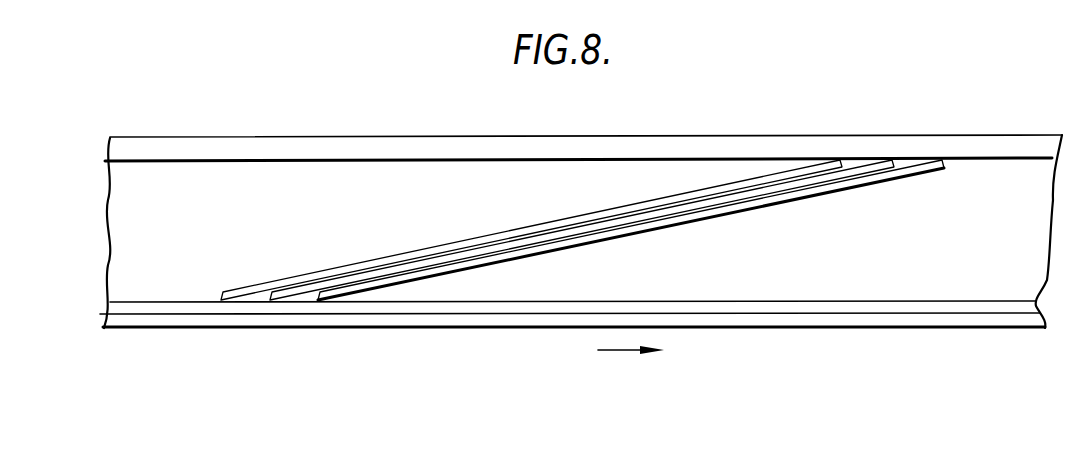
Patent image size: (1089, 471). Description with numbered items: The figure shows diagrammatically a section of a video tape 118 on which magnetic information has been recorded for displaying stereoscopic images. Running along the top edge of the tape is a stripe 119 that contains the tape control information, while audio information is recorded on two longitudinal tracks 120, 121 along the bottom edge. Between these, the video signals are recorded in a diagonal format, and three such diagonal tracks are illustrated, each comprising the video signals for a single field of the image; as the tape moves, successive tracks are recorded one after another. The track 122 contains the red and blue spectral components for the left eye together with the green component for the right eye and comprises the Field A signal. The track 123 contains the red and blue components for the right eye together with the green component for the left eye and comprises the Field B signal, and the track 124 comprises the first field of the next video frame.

The video tape 118 is at (130, 224).
The stripe 119 is at (485, 147).
The audio track 120 is at (450, 318).
The audio track 121 is at (515, 305).
The track 122 is at (637, 228).
The track 123 is at (600, 225).
The track 124 is at (483, 242).